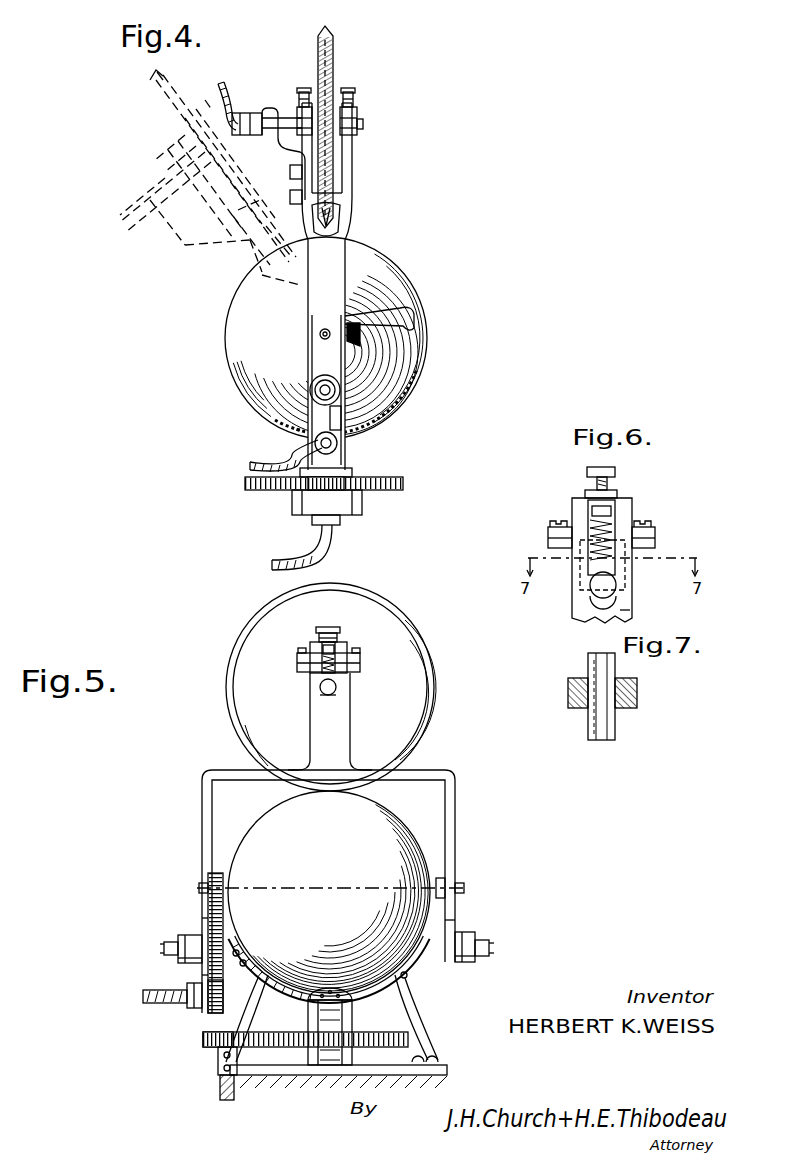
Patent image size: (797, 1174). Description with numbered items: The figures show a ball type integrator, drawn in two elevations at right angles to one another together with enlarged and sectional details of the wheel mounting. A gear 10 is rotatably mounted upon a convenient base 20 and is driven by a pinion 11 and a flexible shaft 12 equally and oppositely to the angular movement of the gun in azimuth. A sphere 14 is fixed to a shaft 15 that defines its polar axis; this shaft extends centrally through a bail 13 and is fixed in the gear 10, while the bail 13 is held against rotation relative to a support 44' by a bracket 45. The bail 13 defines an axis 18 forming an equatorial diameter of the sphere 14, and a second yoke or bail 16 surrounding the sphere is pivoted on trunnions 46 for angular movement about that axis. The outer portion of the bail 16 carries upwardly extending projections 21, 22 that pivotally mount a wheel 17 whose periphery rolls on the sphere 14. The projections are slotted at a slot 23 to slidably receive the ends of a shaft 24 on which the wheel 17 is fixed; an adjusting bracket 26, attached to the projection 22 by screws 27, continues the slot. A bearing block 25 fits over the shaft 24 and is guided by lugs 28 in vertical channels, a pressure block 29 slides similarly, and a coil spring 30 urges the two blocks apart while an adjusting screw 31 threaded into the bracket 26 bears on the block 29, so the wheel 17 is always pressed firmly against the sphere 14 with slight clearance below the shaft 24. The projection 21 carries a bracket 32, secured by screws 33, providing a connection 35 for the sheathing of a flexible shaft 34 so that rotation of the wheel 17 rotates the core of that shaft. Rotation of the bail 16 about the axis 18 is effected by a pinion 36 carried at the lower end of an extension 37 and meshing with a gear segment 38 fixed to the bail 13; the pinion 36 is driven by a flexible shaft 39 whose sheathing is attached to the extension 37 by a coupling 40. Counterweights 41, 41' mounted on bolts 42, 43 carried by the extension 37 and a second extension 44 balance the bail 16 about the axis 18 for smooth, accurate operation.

In FIG. 4, the gear 10 is at (398, 478).
In FIG. 5, the gear 10 is at (400, 1034).
In FIG. 4, the pinion 11 is at (296, 490).
In FIG. 5, the pinion 11 is at (203, 1040).
In FIG. 4, the flexible shaft 12 is at (288, 560).
In FIG. 5, the flexible shaft 12 is at (218, 1090).
In FIG. 5, the bail 13 is at (418, 975).
In FIG. 4, the sphere 14 is at (383, 262).
In FIG. 5, the sphere 14 is at (402, 832).
In FIG. 5, the shaft 15 is at (305, 1000).
In FIG. 4, the second yoke or bail 16 is at (330, 284).
In FIG. 5, the second yoke or bail 16 is at (456, 818).
In FIG. 4, the wheel 17 is at (334, 62).
In FIG. 5, the wheel 17 is at (400, 645).
In FIG. 5, the axis 18 is at (445, 888).
In FIG. 4, the base 20 is at (363, 505).
In FIG. 5, the base 20 is at (306, 1068).
In FIG. 4, the projection 21 is at (302, 160).
In FIG. 4, the projection 22 is at (346, 182).
In FIG. 5, the projection 22 is at (338, 707).
In FIG. 6, the projection 22 is at (625, 611).
In FIG. 5, the slot 23 is at (320, 678).
In FIG. 6, the slot 23 is at (618, 596).
In FIG. 4, the shaft 24 is at (363, 124).
In FIG. 5, the shaft 24 is at (340, 686).
In FIG. 6, the shaft 24 is at (606, 583).
In FIG. 7, the shaft 24 is at (588, 668).
In FIG. 6, the bearing block 25 is at (582, 574).
In FIG. 7, the bearing block 25 is at (594, 686).
In FIG. 5, the adjusting bracket 26 is at (310, 648).
In FIG. 6, the adjusting bracket 26 is at (574, 505).
In FIG. 4, the screws 27 is at (298, 110).
In FIG. 5, the screws 27 is at (329, 650).
In FIG. 6, the screws 27 is at (550, 526).
In FIG. 7, the lugs 28 is at (568, 699).
In FIG. 5, the pressure block 29 is at (338, 653).
In FIG. 6, the pressure block 29 is at (612, 516).
In FIG. 5, the coil spring 30 is at (356, 662).
In FIG. 6, the coil spring 30 is at (548, 544).
In FIG. 4, the adjusting screw 31 is at (302, 90).
In FIG. 5, the adjusting screw 31 is at (325, 630).
In FIG. 6, the adjusting screw 31 is at (617, 472).
In FIG. 4, the bracket 32 is at (250, 113).
In FIG. 4, the screws 33 is at (290, 199).
In FIG. 4, the flexible shaft 34 is at (222, 90).
In FIG. 4, the connection 35 is at (224, 110).
In FIG. 5, the pinion 36 is at (206, 1008).
In FIG. 5, the extension 37 is at (202, 918).
In FIG. 4, the gear segment 38 is at (426, 352).
In FIG. 5, the gear segment 38 is at (210, 880).
In FIG. 4, the flexible shaft 39 is at (250, 460).
In FIG. 5, the flexible shaft 39 is at (150, 994).
In FIG. 4, the coupling 40 is at (336, 446).
In FIG. 5, the coupling 40 is at (190, 983).
In FIG. 5, the counterweight 41 is at (163, 935).
In FIG. 4, the counterweight 41' is at (360, 407).
In FIG. 5, the counterweight 41' is at (492, 940).
In FIG. 5, the bolt 42 is at (162, 948).
In FIG. 4, the bolt 43 is at (320, 390).
In FIG. 5, the bolt 43 is at (494, 950).
In FIG. 4, the extension 44 is at (371, 423).
In FIG. 5, the extension 44 is at (467, 913).
In FIG. 5, the support 44' is at (338, 1090).
In FIG. 5, the bracket 45 is at (432, 1012).
In FIG. 4, the trunnions 46 is at (320, 335).
In FIG. 5, the trunnions 46 is at (200, 888).